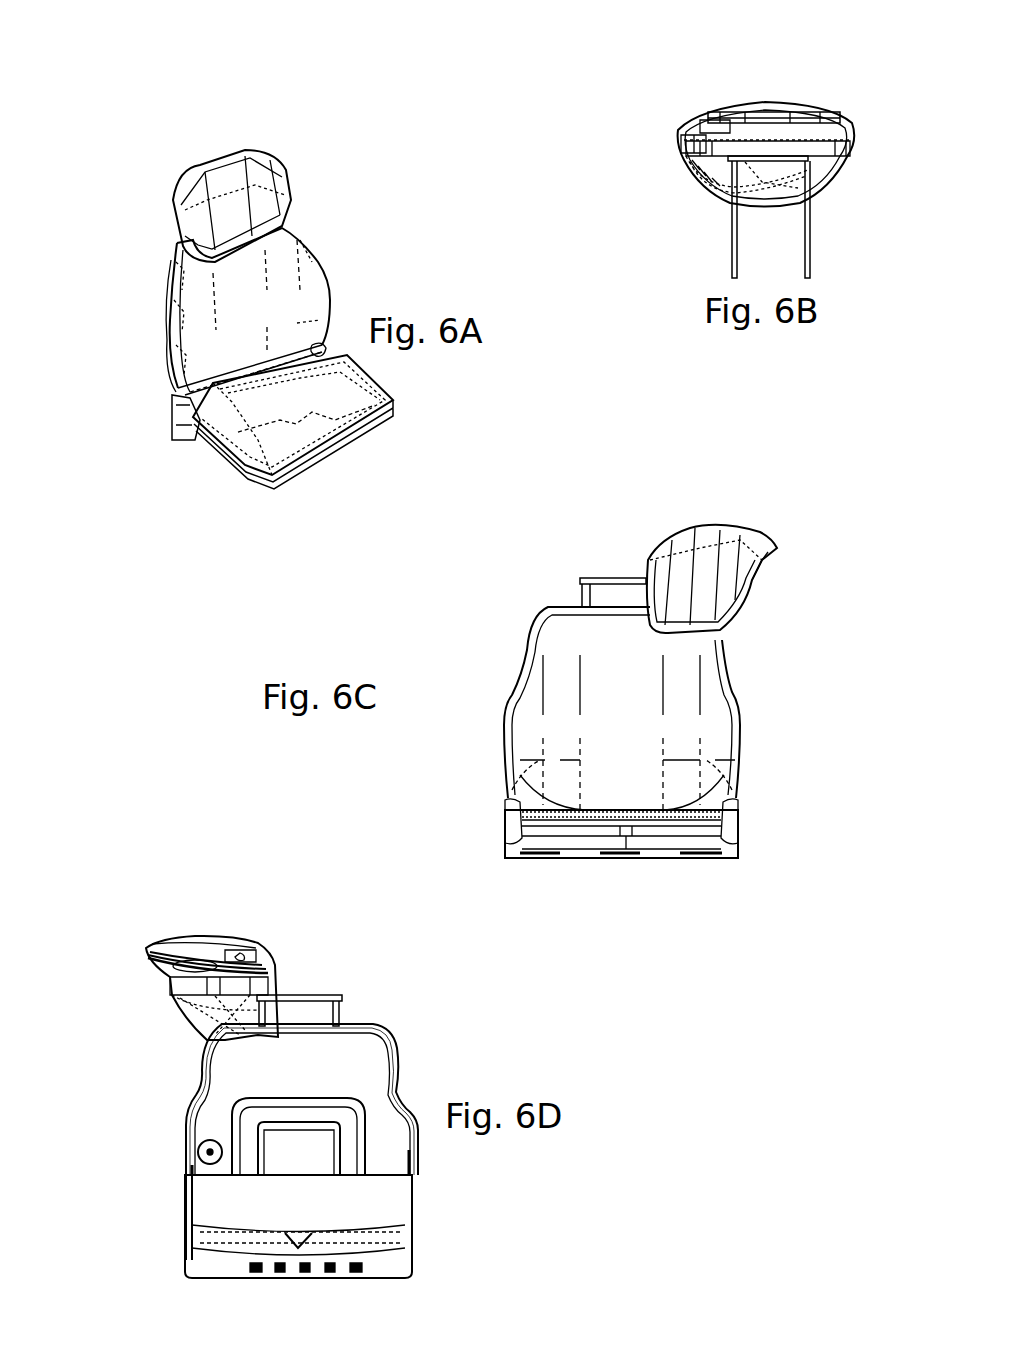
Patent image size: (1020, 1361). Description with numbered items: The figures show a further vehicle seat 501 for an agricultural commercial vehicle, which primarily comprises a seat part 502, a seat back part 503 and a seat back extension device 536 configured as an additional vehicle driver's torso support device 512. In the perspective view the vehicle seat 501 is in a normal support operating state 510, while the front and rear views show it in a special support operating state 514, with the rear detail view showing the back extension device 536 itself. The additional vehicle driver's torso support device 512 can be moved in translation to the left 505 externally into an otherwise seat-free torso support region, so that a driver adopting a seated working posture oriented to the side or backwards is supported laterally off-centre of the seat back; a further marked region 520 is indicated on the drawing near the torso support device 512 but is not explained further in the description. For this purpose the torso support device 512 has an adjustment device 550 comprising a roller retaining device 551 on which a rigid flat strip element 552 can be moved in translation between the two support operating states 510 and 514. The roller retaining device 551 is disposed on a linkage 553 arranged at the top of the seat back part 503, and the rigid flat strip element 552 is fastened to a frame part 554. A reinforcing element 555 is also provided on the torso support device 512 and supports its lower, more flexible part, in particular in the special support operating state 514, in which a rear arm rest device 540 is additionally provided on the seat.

In FIG. 6A, the vehicle seat 501 is at (400, 155).
In FIG. 6C, the vehicle seat 501 is at (445, 652).
In FIG. 6A, the seat part 502 is at (235, 420).
In FIG. 6C, the seat part 502 is at (556, 845).
In FIG. 6D, the seat part 502 is at (410, 1267).
In FIG. 6A, the seat back part 503 is at (176, 330).
In FIG. 6C, the seat back part 503 is at (718, 721).
In FIG. 6D, the seat back part 503 is at (208, 1122).
In FIG. 6A, the left 505 is at (408, 272).
In FIG. 6C, the left 505 is at (854, 671).
In FIG. 6A, the normal support operating state 510 is at (430, 237).
In FIG. 6A, the additional vehicle driver's torso support device 512 is at (262, 170).
In FIG. 6B, the additional vehicle driver's torso support device 512 is at (818, 115).
In FIG. 6C, the additional vehicle driver's torso support device 512 is at (712, 527).
In FIG. 6D, the additional vehicle driver's torso support device 512 is at (200, 940).
In FIG. 6C, the special support operating state 514 is at (470, 748).
In FIG. 6D, the special support operating state 514 is at (487, 1192).
In FIG. 6A, the top portion 520 is at (352, 226).
In FIG. 6C, the top portion 520 is at (782, 595).
In FIG. 6D, the top portion 520 is at (175, 918).
In FIG. 6A, the seat back extension device 536 is at (150, 225).
In FIG. 6B, the seat back extension device 536 is at (660, 152).
In FIG. 6C, the seat back extension device 536 is at (793, 530).
In FIG. 6D, the seat back extension device 536 is at (160, 1010).
In FIG. 6C, the rear arm rest device 540 is at (572, 590).
In FIG. 6D, the rear arm rest device 540 is at (372, 1012).
In FIG. 6B, the adjustment device 550 is at (682, 196).
In FIG. 6D, the adjustment device 550 is at (185, 1032).
In FIG. 6B, the roller retaining device 551 is at (708, 125).
In FIG. 6C, the roller retaining device 551 is at (594, 578).
In FIG. 6D, the roller retaining device 551 is at (248, 962).
In FIG. 6B, the rigid flat strip element 552 is at (786, 150).
In FIG. 6D, the rigid flat strip element 552 is at (170, 985).
In FIG. 6B, the linkage 553 is at (810, 234).
In FIG. 6D, the linkage 553 is at (338, 995).
In FIG. 6B, the frame part 554 is at (750, 112).
In FIG. 6D, the frame part 554 is at (148, 952).
In FIG. 6B, the reinforcing element 555 is at (748, 170).